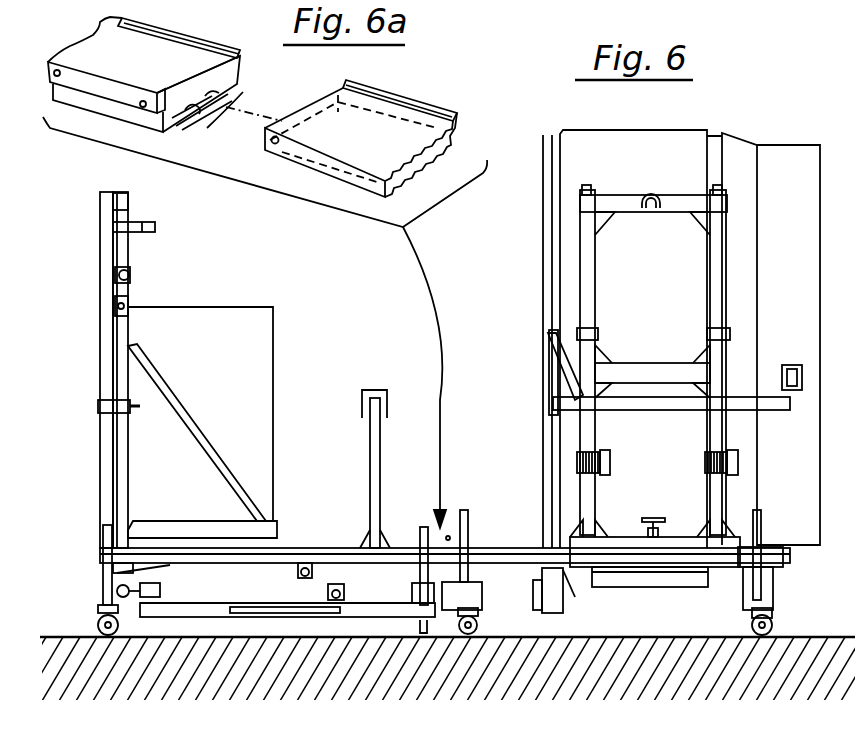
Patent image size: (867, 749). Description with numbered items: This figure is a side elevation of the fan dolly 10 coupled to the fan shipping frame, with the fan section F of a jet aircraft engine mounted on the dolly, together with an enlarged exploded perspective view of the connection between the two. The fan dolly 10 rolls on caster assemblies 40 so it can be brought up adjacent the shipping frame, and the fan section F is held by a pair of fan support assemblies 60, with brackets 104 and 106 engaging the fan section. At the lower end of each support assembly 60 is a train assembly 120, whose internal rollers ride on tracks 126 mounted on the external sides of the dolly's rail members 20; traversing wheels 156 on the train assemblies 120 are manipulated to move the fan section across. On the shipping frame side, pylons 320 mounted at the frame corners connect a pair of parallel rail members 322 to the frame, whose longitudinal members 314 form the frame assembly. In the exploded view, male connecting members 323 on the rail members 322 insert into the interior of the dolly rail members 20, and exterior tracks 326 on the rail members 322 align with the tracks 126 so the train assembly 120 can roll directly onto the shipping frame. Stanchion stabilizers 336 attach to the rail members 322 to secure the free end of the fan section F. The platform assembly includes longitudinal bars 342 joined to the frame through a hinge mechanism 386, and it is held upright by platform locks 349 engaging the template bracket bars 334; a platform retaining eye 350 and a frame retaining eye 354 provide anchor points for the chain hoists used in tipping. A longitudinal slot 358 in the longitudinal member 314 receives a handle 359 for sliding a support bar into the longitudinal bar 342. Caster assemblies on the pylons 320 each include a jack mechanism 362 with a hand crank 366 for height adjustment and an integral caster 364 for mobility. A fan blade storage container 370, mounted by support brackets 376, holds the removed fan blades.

In FIG. 6, the fan dolly 10 is at (683, 600).
In FIG. 6A, the rail members 20 is at (443, 173).
In FIG. 6, the rail members 20 is at (533, 547).
In FIG. 6, the caster assemblies 40 is at (488, 650).
In FIG. 6, the fan support assemblies 60 is at (612, 182).
In FIG. 6, the fan section F is at (687, 142).
In FIG. 6, the bracket 104 is at (553, 368).
In FIG. 6, the bracket 106 is at (805, 370).
In FIG. 6, the train assembly 120 is at (640, 602).
In FIG. 6A, the tracks 126 is at (457, 130).
In FIG. 6, the traversing wheels 156 is at (653, 517).
In FIG. 6, the longitudinal members 314 is at (275, 603).
In FIG. 6, the pylon 320 is at (156, 227).
In FIG. 6A, the rail members 322 is at (165, 67).
In FIG. 6, the rail members 322 is at (318, 547).
In FIG. 6A, the male connecting members 323 is at (243, 92).
In FIG. 6A, the tracks 326 is at (180, 42).
In FIG. 6, the template bracket bars 334 is at (124, 205).
In FIG. 6, the stanchion stabilizers 336 is at (370, 465).
In FIG. 6, the longitudinal bars 342 is at (105, 222).
In FIG. 6, the platform locks 349 is at (98, 410).
In FIG. 6, the platform retaining eye 350 is at (130, 275).
In FIG. 6, the frame retaining eye 354 is at (328, 593).
In FIG. 6, the longitudinal slot 358 is at (302, 605).
In FIG. 6, the handle 359 is at (327, 612).
In FIG. 6, the jack mechanism 362 is at (417, 588).
In FIG. 6, the casters 364 is at (97, 620).
In FIG. 6, the hand crank 366 is at (100, 548).
In FIG. 6, the fan blade storage container 370 is at (223, 325).
In FIG. 6, the support brackets 376 is at (180, 427).
In FIG. 6, the hinge mechanism 386 is at (162, 593).